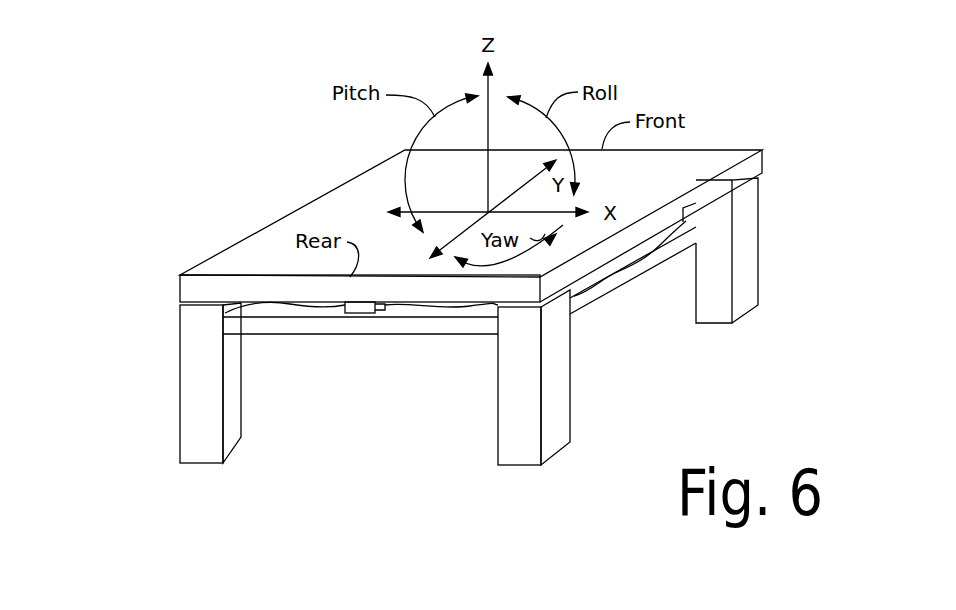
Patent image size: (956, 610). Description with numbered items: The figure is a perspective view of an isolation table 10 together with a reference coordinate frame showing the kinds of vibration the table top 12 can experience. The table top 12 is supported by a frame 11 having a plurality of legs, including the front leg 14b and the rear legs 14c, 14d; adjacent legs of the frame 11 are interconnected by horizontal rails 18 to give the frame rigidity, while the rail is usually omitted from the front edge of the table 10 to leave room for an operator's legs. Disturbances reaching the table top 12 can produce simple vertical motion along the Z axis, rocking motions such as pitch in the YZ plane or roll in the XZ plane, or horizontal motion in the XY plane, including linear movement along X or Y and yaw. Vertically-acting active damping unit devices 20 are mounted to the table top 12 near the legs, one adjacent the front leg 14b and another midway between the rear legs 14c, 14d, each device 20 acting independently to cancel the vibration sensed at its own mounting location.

The isolation table 10 is at (217, 205).
The frame 11 is at (120, 328).
The table top 12 is at (697, 162).
The front leg 14b is at (753, 253).
The rear leg 14c is at (191, 373).
The rear leg 14d is at (560, 390).
The horizontal rail 18 is at (288, 337).
The active damping unit device 20 is at (357, 313).